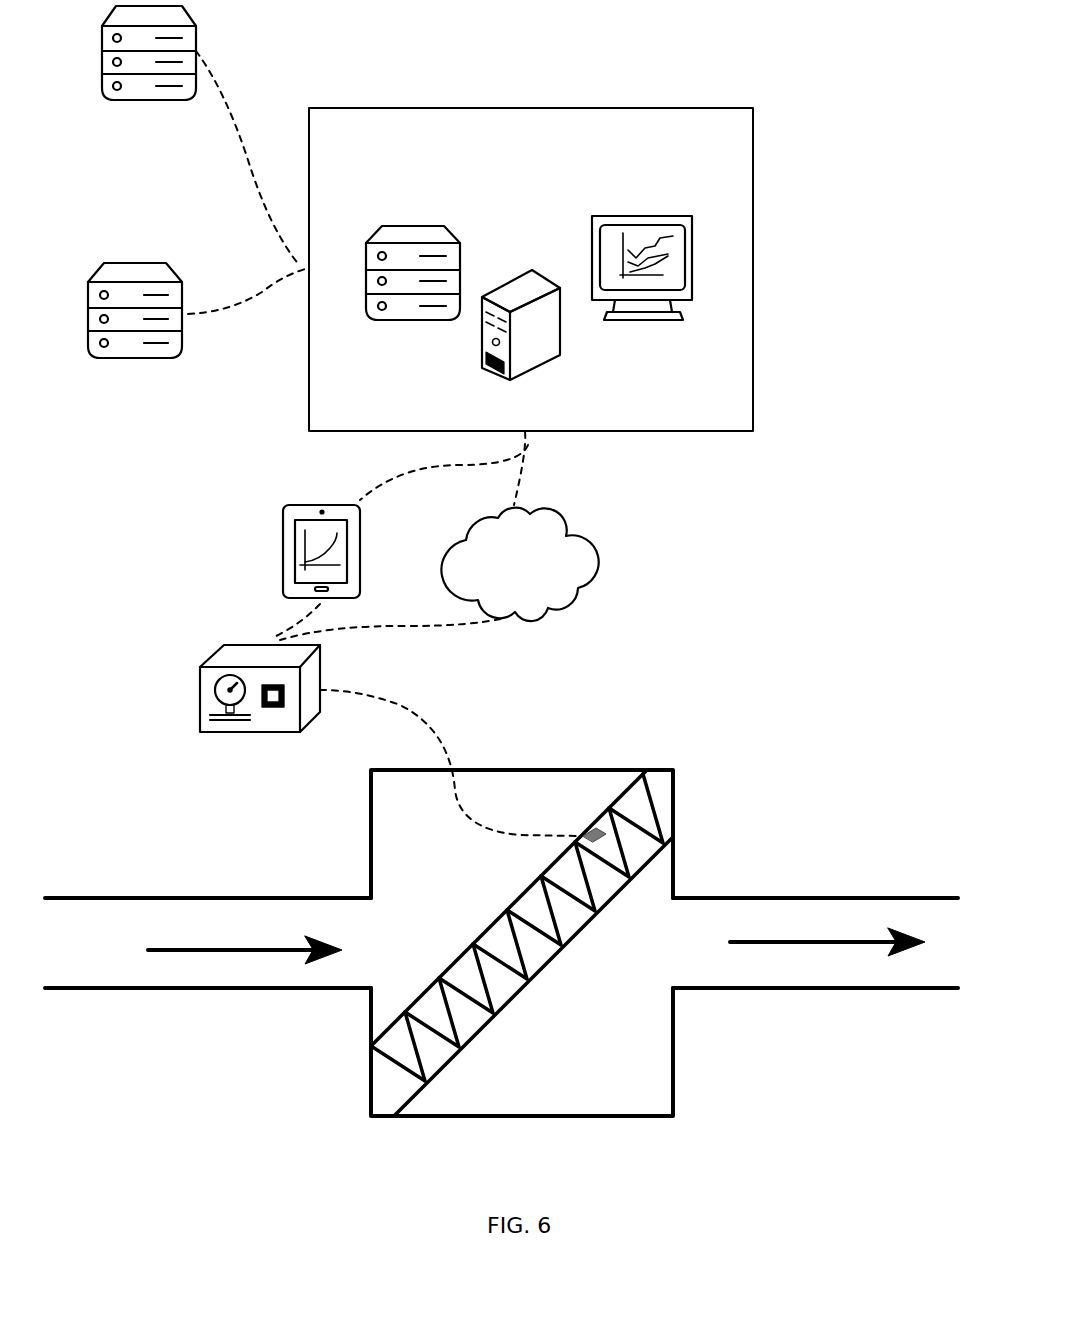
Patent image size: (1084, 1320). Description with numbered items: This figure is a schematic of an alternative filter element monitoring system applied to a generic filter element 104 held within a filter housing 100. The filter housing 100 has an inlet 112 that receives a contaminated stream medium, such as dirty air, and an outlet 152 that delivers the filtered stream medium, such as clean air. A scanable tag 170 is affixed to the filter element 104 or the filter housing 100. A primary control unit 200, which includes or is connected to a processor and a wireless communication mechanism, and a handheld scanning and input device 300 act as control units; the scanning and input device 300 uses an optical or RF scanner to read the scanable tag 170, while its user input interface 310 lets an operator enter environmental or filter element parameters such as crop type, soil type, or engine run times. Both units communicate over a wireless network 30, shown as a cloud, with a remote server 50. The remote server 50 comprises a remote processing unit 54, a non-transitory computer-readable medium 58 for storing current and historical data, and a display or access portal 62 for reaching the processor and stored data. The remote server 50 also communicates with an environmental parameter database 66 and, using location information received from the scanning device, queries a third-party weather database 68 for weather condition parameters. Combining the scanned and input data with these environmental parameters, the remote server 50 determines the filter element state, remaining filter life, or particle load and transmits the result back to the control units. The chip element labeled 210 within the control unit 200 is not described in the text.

The wireless network 30 is at (592, 565).
The remote server 50 is at (753, 262).
The remote processing unit 54 is at (520, 296).
The non-transitory computer-readable medium 58 is at (426, 226).
The display or access portal 62 is at (645, 216).
The environmental parameter database 66 is at (134, 263).
The third-party weather database 68 is at (196, 26).
The filter housing 100 is at (673, 770).
The filter element 104 is at (392, 1088).
The inlet 112 is at (189, 980).
The outlet 152 is at (887, 970).
The scanable tag 170 is at (592, 830).
The primary control unit 200 is at (220, 715).
The controller chip 210 is at (275, 707).
The scanning and input device 300 is at (293, 515).
The user input interface 310 is at (305, 565).